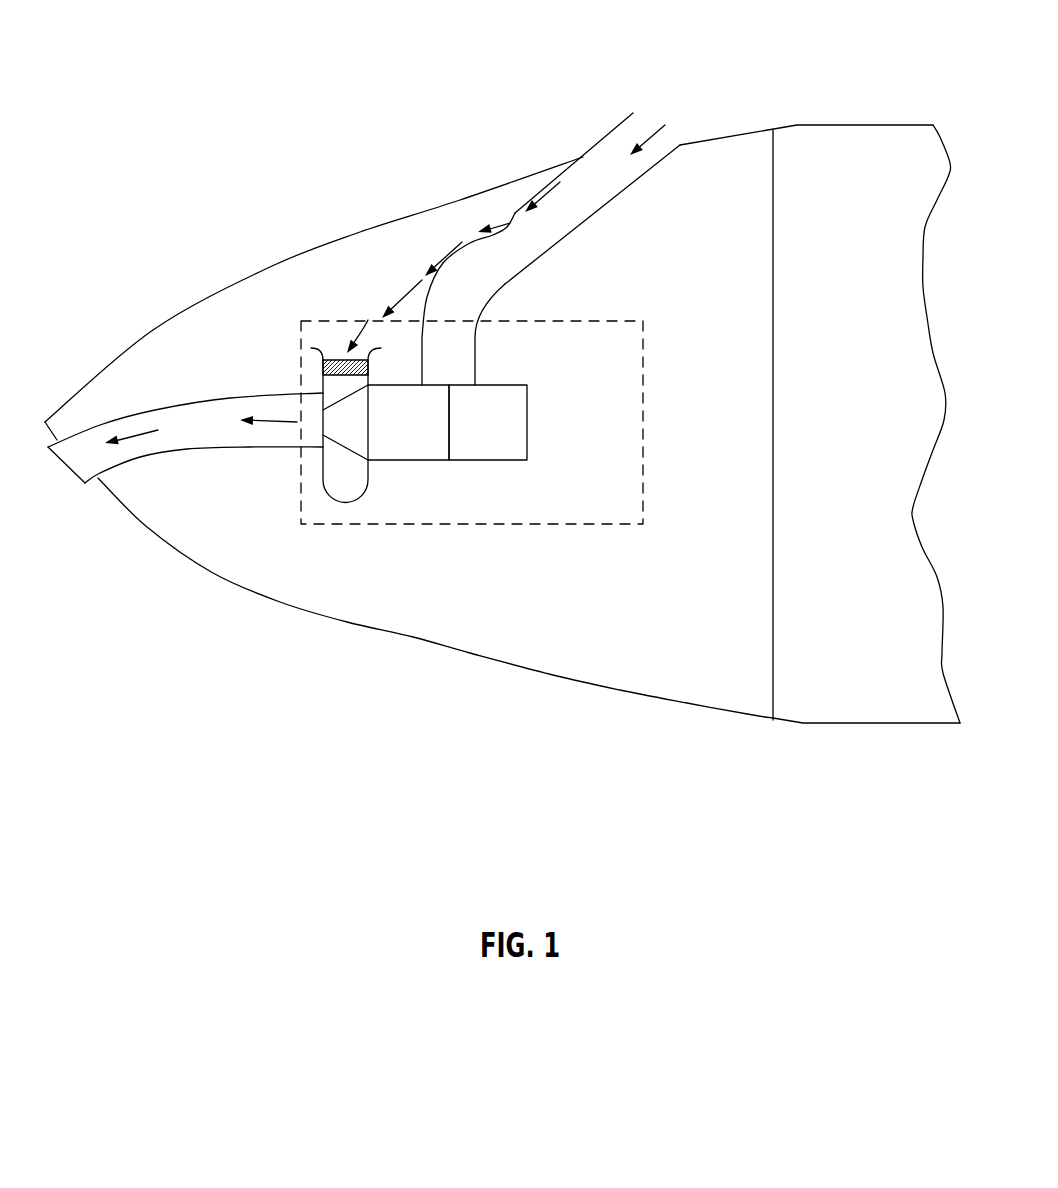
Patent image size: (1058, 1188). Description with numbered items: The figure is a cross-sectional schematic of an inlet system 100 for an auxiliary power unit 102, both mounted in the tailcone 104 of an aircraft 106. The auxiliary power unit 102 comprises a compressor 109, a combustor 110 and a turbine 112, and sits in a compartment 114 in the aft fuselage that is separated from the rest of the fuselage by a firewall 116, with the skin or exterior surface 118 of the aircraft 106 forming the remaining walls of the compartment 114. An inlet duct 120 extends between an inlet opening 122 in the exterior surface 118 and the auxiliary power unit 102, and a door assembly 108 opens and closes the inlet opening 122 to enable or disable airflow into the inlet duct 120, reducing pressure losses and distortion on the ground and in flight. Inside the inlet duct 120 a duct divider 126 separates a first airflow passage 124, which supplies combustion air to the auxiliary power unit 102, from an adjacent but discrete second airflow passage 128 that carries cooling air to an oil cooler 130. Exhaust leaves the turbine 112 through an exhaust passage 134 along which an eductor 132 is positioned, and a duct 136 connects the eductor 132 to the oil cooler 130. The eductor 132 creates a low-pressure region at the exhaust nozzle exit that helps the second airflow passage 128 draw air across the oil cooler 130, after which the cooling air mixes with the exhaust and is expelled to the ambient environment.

The inlet system 100 is at (598, 97).
The auxiliary power unit 102 is at (574, 320).
The tailcone 104 is at (409, 466).
The aircraft 106 is at (318, 249).
The door assembly 108 is at (620, 151).
The compressor 109 is at (488, 462).
The combustor 110 is at (412, 462).
The turbine 112 is at (314, 460).
The compartment 114 is at (773, 378).
The firewall 116 is at (773, 555).
The exterior surface 118 is at (620, 692).
The inlet duct 120 is at (642, 178).
The inlet opening 122 is at (657, 145).
The first airflow passage 124 is at (580, 213).
The duct divider 126 is at (542, 205).
The second airflow passage 128 is at (580, 163).
The oil cooler 130 is at (333, 358).
The eductor 132 is at (323, 425).
The exhaust passage 134 is at (187, 450).
The duct 136 is at (327, 390).